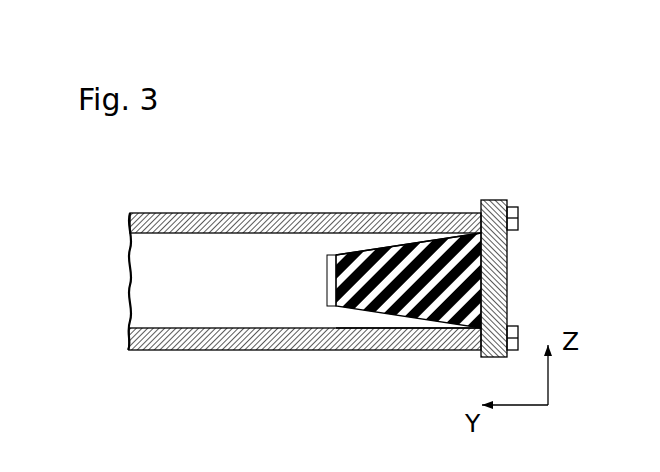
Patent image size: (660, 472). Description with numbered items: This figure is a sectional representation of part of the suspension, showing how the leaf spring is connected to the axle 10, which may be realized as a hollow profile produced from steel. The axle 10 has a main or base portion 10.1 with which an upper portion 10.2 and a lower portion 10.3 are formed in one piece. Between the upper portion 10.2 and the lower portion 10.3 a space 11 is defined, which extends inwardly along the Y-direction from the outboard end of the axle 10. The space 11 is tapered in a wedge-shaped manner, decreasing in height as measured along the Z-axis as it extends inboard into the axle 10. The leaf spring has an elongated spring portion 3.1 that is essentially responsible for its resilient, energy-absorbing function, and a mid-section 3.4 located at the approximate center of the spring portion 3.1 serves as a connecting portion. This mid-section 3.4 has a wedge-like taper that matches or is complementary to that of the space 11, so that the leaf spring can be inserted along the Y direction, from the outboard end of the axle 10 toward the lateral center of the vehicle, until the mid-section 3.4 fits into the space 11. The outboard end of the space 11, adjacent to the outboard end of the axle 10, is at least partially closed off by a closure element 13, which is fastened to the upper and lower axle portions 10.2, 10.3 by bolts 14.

The axle 10 is at (304, 268).
The main or base portion of the axle 10.1 is at (288, 352).
The upper portion of the axle 10.2 is at (398, 212).
The lower portion of the axle 10.3 is at (383, 352).
The space 11 is at (369, 217).
The spring portion 3.1 is at (390, 247).
The mid-section 3.4 is at (365, 243).
The closure element 13 is at (490, 200).
The bolts 14 is at (518, 221).